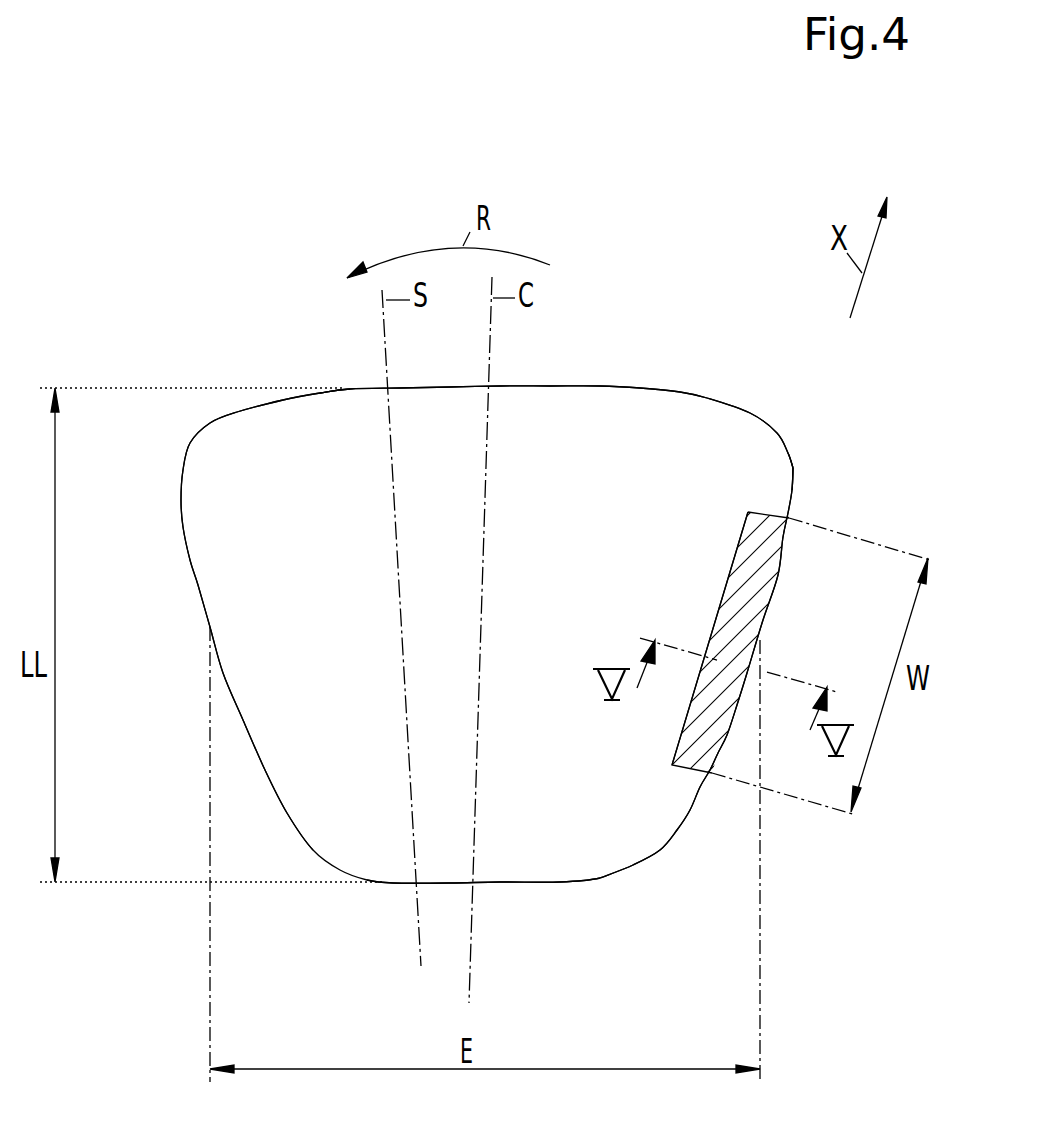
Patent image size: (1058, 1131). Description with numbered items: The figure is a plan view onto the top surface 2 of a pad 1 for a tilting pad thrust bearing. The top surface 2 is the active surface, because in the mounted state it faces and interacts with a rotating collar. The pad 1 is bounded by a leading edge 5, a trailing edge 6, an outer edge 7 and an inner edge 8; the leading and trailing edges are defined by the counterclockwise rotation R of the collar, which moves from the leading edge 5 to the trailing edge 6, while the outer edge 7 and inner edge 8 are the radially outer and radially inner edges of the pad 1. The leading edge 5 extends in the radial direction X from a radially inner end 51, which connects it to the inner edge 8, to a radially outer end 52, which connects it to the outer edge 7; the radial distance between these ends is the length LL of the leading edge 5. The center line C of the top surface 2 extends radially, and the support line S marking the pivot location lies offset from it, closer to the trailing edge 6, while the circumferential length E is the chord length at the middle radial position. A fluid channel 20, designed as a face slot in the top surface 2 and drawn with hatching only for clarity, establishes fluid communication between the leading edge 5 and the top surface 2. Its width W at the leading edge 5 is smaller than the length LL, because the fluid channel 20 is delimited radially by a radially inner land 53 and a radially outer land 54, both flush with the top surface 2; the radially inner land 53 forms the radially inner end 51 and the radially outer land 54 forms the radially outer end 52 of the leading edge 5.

The pad 1 is at (710, 148).
The top surface 2 is at (262, 480).
The leading edge 5 is at (779, 572).
The trailing edge 6 is at (198, 586).
The outer edge 7 is at (652, 387).
The inner edge 8 is at (513, 883).
The fluid channel 20 is at (697, 607).
The radially inner end 51 is at (648, 866).
The radially outer end 52 is at (782, 432).
The radially inner land 53 is at (693, 812).
The radially outer land 54 is at (795, 467).